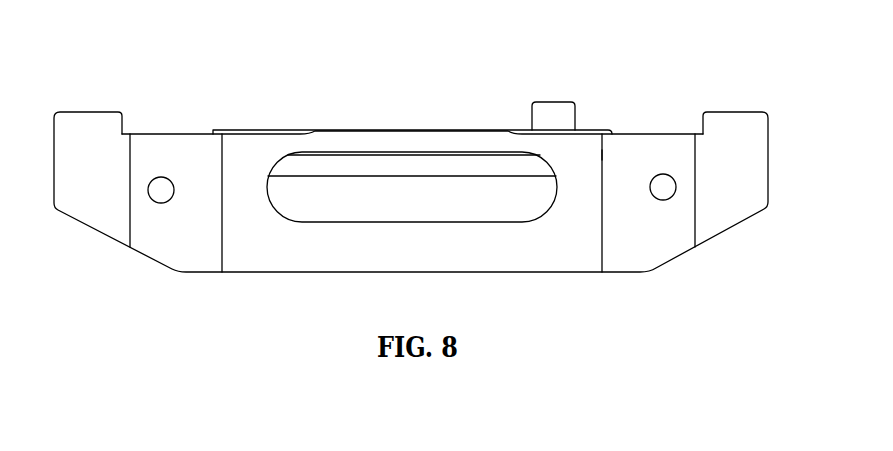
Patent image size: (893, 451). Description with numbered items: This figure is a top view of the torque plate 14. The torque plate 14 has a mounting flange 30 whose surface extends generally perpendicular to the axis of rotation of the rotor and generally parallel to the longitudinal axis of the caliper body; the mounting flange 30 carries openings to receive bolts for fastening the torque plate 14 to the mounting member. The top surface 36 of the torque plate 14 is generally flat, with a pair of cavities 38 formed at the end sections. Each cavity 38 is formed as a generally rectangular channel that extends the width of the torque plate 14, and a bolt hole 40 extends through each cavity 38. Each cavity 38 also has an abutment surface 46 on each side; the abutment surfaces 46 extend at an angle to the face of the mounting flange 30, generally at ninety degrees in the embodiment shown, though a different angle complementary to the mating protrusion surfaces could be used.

The torque plate 14 is at (770, 183).
The mounting flange 30 is at (250, 131).
The top surface 36 is at (572, 248).
The cavity 38 is at (650, 145).
The bolt hole 40 is at (668, 185).
The abutment surface 46 is at (606, 158).